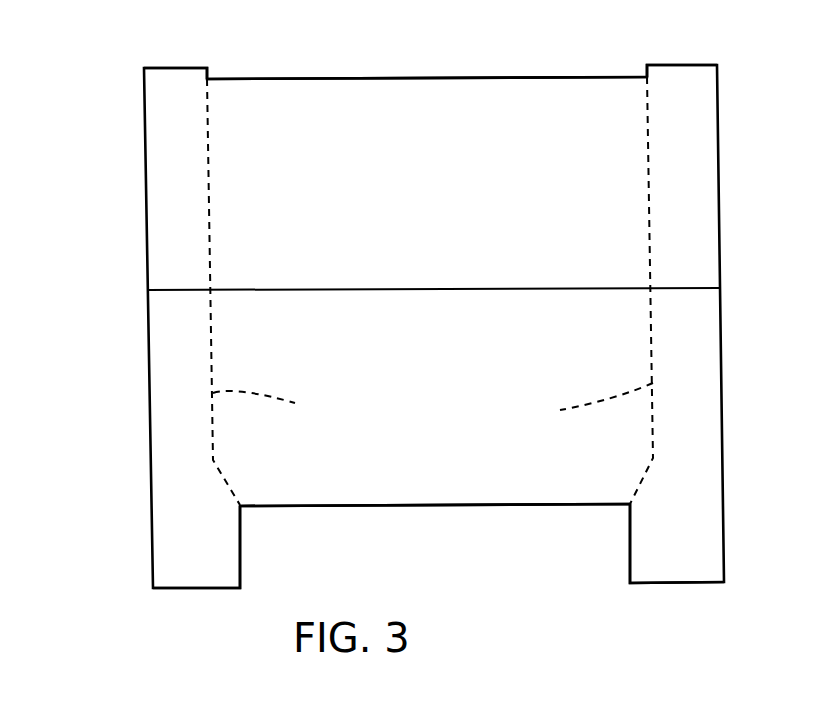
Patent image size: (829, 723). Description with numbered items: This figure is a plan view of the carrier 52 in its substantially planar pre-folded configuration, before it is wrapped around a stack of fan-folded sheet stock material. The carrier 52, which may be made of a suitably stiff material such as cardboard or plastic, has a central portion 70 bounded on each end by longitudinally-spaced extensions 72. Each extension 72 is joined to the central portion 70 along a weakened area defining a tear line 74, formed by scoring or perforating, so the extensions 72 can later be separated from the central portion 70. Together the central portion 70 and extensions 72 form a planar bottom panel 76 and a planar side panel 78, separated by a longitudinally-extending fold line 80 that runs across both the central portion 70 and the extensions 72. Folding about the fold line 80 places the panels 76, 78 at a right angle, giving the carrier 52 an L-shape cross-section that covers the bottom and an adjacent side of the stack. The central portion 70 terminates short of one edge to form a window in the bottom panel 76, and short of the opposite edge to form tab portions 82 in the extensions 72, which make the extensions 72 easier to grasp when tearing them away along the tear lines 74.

The carrier 52 is at (170, 465).
The central portion 70 is at (472, 525).
The extensions 72 is at (206, 612).
The tear line 74 is at (433, 402).
The bottom panel 76 is at (120, 361).
The side panel 78 is at (122, 171).
The fold line 80 is at (398, 288).
The tab portions 82 is at (178, 76).